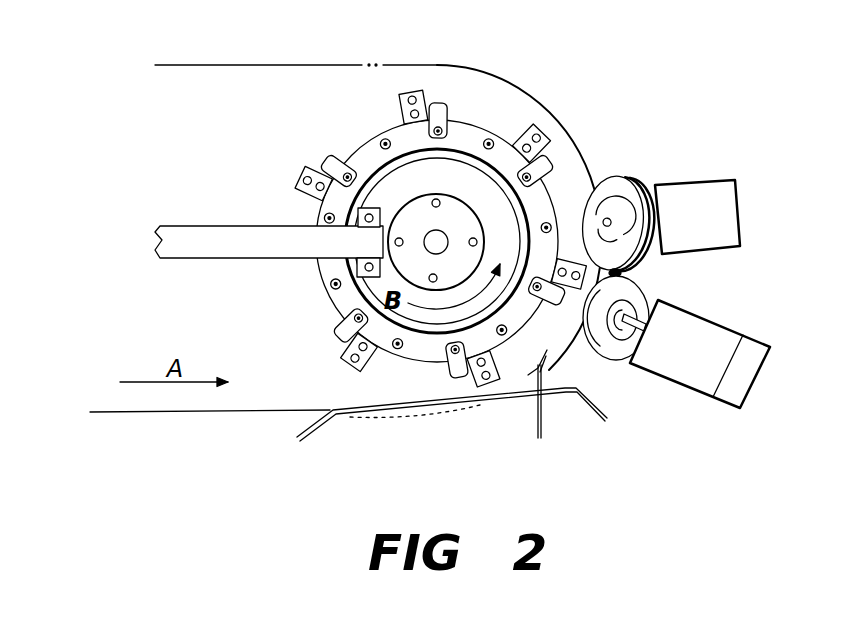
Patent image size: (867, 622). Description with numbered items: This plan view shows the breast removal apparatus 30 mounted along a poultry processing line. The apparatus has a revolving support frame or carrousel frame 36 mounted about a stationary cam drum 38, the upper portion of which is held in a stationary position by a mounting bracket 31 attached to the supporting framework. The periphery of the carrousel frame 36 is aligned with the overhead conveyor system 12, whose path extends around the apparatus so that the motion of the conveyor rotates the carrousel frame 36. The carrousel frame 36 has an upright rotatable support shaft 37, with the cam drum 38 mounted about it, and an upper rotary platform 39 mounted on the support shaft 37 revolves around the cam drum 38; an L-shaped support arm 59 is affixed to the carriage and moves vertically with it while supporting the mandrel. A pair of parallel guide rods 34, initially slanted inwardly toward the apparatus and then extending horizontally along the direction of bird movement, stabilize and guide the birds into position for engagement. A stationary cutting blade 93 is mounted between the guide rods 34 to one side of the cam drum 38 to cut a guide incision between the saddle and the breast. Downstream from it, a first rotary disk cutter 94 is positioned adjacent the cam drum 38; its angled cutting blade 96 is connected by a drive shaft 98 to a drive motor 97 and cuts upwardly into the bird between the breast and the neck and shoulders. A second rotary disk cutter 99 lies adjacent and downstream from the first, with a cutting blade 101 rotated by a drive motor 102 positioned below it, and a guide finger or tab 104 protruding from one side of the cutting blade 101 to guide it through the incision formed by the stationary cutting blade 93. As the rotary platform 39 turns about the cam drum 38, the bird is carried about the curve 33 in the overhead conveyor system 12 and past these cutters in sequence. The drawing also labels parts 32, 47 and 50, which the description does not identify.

The overhead conveyor system 12 is at (232, 66).
The breast removal apparatus 30 is at (603, 137).
The mounting bracket 31 is at (185, 256).
The mounting plate 32 is at (325, 212).
The curve 33 is at (563, 111).
The guide rods 34 is at (316, 430).
The carrousel frame 36 is at (384, 372).
The support shaft 37 is at (440, 240).
The cam drum 38 is at (390, 192).
The upper rotary platform 39 is at (325, 277).
The hub 47 is at (431, 190).
The hub holes 50 is at (446, 274).
The L-shaped support arm 59 is at (400, 105).
The stationary cutting blade 93 is at (546, 360).
The first rotary disk cutter 94 is at (629, 398).
The cutting blade 96 is at (590, 350).
The drive motor 97 is at (675, 372).
The drive shaft 98 is at (645, 327).
The second rotary disk cutter 99 is at (700, 149).
The cutting blade 101 is at (609, 173).
The drive motor 102 is at (683, 229).
The guide finger 104 is at (620, 272).